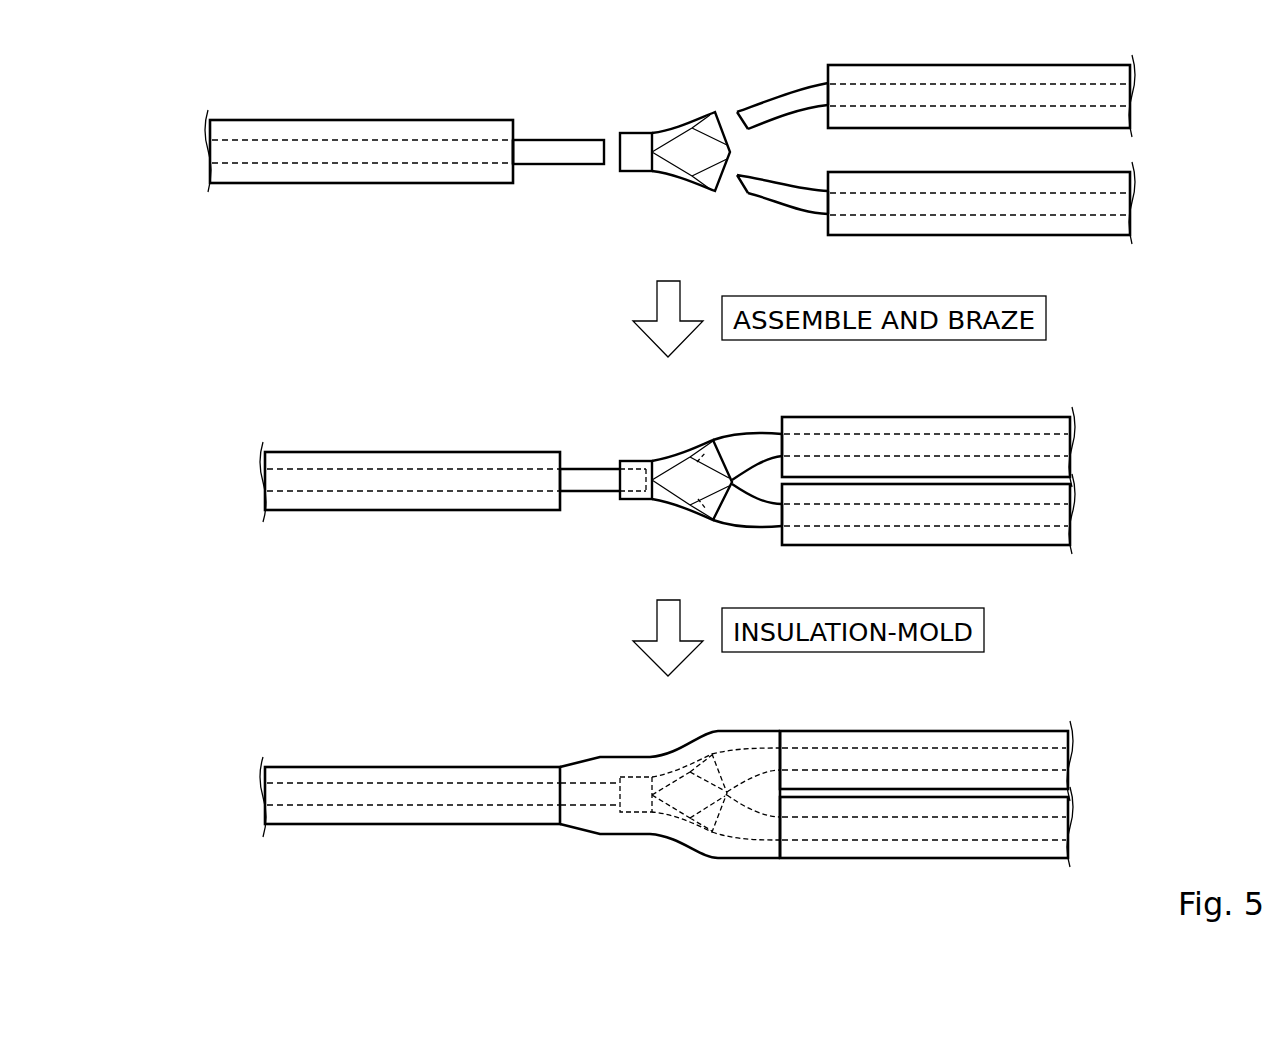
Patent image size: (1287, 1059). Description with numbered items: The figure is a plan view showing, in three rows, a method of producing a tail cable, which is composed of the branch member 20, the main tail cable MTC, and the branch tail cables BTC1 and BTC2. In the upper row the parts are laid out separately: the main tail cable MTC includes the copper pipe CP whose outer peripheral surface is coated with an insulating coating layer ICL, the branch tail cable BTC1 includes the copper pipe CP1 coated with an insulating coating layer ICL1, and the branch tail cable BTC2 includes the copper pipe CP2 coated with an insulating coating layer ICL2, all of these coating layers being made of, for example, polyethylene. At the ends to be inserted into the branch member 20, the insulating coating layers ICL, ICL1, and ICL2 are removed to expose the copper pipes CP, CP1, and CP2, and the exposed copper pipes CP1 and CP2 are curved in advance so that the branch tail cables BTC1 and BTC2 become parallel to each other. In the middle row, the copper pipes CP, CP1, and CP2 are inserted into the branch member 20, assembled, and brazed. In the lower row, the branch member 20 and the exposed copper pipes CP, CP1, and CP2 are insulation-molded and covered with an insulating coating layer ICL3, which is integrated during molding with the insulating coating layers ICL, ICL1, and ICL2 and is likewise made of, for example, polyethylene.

The main tail cable MTC is at (361, 114).
The copper pipe CP is at (570, 139).
The branch member 20 is at (636, 133).
The insulating coating layer ICL is at (517, 171).
The copper pipe CP1 is at (744, 112).
The copper pipe CP2 is at (745, 192).
The insulating coating layer ICL1 is at (822, 73).
The insulating coating layer ICL2 is at (821, 231).
The branch tail cable BTC1 is at (999, 58).
The branch tail cable BTC2 is at (1012, 244).
The insulating coating layer ICL3 is at (594, 757).